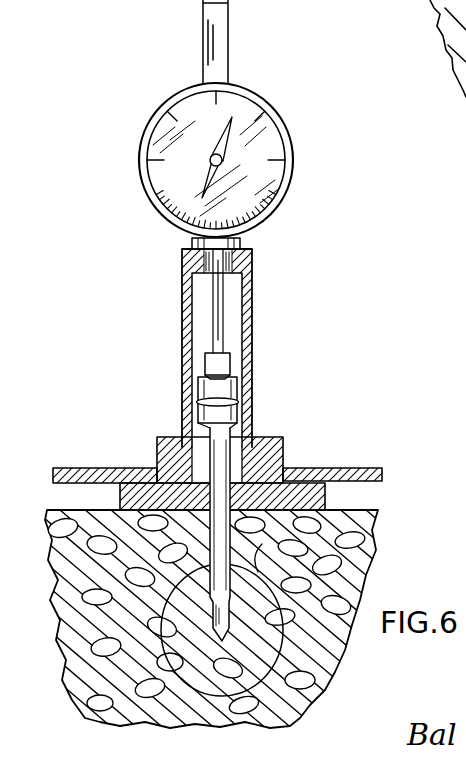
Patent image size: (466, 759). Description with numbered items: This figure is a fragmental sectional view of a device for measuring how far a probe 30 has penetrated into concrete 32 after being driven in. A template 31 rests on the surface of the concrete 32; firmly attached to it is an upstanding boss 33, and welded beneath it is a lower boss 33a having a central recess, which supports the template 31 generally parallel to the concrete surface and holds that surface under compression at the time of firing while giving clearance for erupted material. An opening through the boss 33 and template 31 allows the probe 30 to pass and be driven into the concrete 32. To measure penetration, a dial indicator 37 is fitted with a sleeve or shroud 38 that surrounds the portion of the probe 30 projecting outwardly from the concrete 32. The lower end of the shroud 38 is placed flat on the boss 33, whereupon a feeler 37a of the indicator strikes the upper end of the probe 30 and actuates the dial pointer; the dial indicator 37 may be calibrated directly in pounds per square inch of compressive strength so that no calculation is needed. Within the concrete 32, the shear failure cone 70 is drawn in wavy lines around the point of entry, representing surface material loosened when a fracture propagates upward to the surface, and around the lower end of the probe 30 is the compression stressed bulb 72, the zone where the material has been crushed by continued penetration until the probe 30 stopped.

The dial indicator 37 is at (255, 146).
The feeler 37a is at (218, 289).
The sleeve or shroud 38 is at (250, 315).
The probe 30 is at (235, 437).
The boss 33a is at (194, 441).
The boss 33 is at (270, 452).
The template 31 is at (330, 478).
The concrete 32 is at (95, 622).
The shear failure cone 70 is at (262, 558).
The compression stressed bulb 72 is at (278, 662).